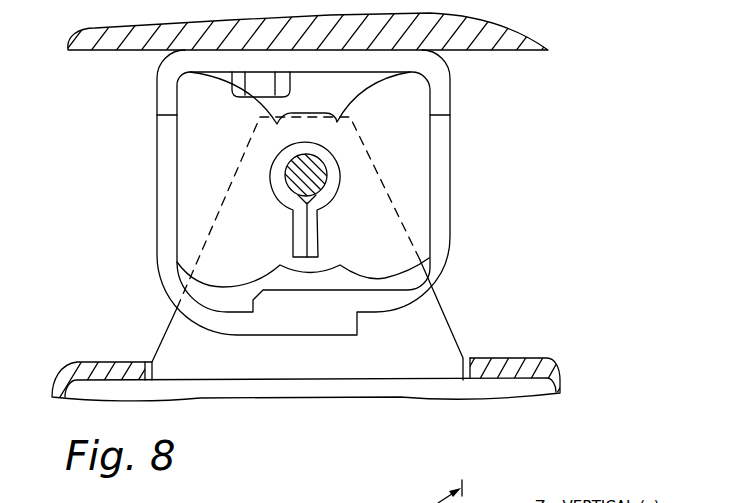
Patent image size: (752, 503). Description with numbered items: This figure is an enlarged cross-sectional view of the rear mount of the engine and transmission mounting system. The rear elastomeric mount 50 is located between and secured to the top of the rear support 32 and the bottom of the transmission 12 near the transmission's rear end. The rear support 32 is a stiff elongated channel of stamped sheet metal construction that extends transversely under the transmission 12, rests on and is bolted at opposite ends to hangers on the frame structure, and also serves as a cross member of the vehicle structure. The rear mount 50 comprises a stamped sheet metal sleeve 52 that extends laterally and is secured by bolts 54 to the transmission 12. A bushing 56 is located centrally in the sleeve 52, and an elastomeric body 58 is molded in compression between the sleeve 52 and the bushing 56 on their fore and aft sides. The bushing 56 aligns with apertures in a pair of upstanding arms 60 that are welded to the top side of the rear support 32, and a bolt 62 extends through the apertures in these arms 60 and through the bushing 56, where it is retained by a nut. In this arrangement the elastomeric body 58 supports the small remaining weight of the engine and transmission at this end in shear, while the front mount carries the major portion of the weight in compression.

The transmission 12 is at (537, 32).
The rear lateral support 32 is at (553, 373).
The rear elastomeric mount 50 is at (462, 144).
The sleeve 52 is at (157, 155).
The bolts 54 is at (250, 87).
The bushing 56 is at (322, 205).
The elastomeric body 58 is at (187, 222).
The upstanding arms 60 is at (447, 322).
The bolt 62 is at (320, 167).